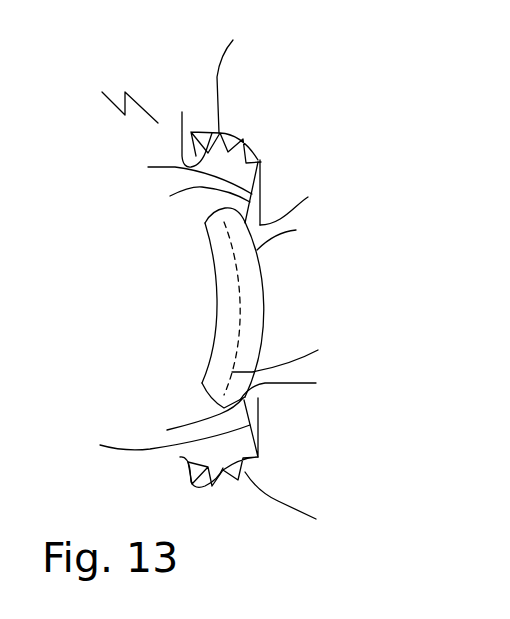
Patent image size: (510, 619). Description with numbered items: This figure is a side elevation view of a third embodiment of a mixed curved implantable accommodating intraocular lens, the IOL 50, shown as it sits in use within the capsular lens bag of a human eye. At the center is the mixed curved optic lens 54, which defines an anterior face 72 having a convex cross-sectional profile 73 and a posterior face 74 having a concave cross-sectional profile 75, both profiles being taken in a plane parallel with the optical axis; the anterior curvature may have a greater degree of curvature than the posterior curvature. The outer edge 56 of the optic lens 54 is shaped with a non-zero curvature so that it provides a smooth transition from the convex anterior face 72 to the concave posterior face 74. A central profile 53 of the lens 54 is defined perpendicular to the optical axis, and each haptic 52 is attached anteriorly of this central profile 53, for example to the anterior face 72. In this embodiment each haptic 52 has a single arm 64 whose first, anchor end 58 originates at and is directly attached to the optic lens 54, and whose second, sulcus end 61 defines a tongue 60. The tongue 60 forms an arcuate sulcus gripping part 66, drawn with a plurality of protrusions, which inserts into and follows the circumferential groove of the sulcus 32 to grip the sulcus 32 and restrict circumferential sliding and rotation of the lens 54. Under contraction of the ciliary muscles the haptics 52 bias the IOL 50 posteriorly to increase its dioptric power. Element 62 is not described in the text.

The mixed curved implantable accommodating intraocular lens 50 is at (115, 91).
The arcuate sulcus gripping part 66 is at (281, 273).
The sulcus 32 is at (243, 138).
The tongue 60 is at (115, 483).
The sulcus end 61 is at (246, 140).
The anchor wall 62 is at (259, 158).
The arm 64 is at (162, 303).
The haptic 52 is at (198, 196).
The outer edge 56 is at (190, 418).
The anchor end 58 is at (292, 288).
The optic lens 54 is at (291, 233).
The central profile 53 is at (290, 355).
The anterior face 72 is at (262, 277).
The convex cross-sectional profile 73 is at (263, 337).
The posterior face 74 is at (212, 246).
The concave cross-sectional profile 75 is at (218, 285).